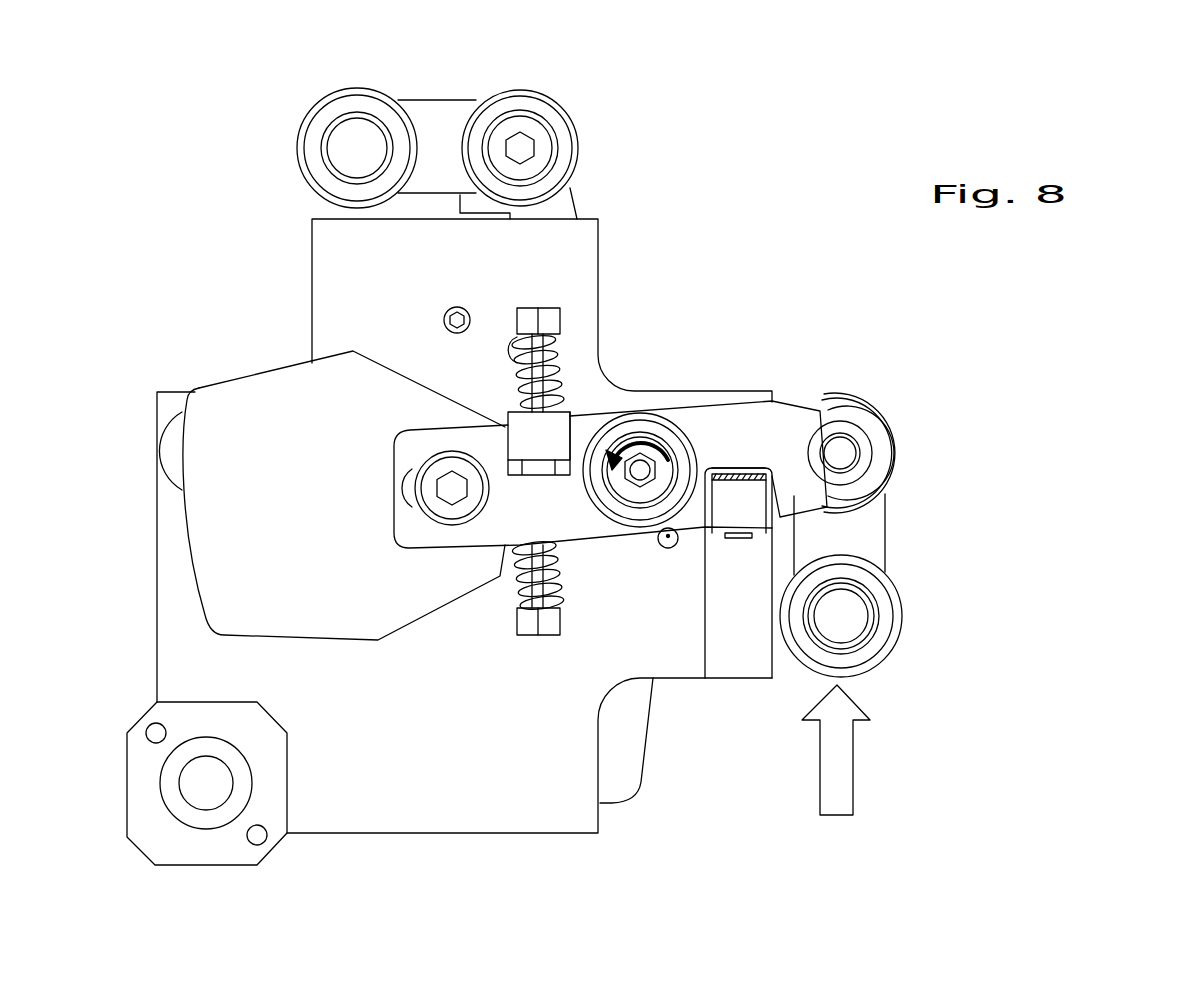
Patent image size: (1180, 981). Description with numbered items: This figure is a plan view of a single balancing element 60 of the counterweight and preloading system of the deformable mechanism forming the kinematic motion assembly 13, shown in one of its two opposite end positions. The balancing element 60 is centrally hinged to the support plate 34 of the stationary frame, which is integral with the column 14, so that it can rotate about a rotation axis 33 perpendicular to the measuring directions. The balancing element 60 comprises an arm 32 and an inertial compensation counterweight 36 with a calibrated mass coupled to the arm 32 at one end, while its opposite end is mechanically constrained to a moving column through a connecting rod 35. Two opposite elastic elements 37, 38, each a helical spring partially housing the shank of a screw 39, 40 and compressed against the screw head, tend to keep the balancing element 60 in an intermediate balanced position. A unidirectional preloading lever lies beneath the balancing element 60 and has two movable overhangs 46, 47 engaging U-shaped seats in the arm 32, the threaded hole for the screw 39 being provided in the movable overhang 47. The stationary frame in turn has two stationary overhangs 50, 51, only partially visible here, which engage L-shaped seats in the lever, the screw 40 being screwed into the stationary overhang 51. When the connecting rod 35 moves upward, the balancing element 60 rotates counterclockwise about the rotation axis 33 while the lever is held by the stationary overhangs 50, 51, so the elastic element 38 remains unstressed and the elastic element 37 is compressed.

The kinematic motion assembly 13 is at (1022, 810).
The column 14 is at (155, 828).
The arm 32 is at (770, 453).
The rotation axis 33 is at (644, 470).
The support plate 34 is at (230, 665).
The connecting rod 35 is at (430, 122).
The inertial compensation counterweight 36 is at (263, 437).
The elastic element 37 is at (550, 570).
The elastic element 38 is at (560, 356).
The screw 39 is at (535, 622).
The screw 40 is at (527, 315).
The movable overhang 46 is at (737, 512).
The movable overhang 47 is at (532, 442).
The stationary overhang 50 is at (761, 468).
The stationary overhang 51 is at (513, 470).
The balancing element 60 is at (597, 388).